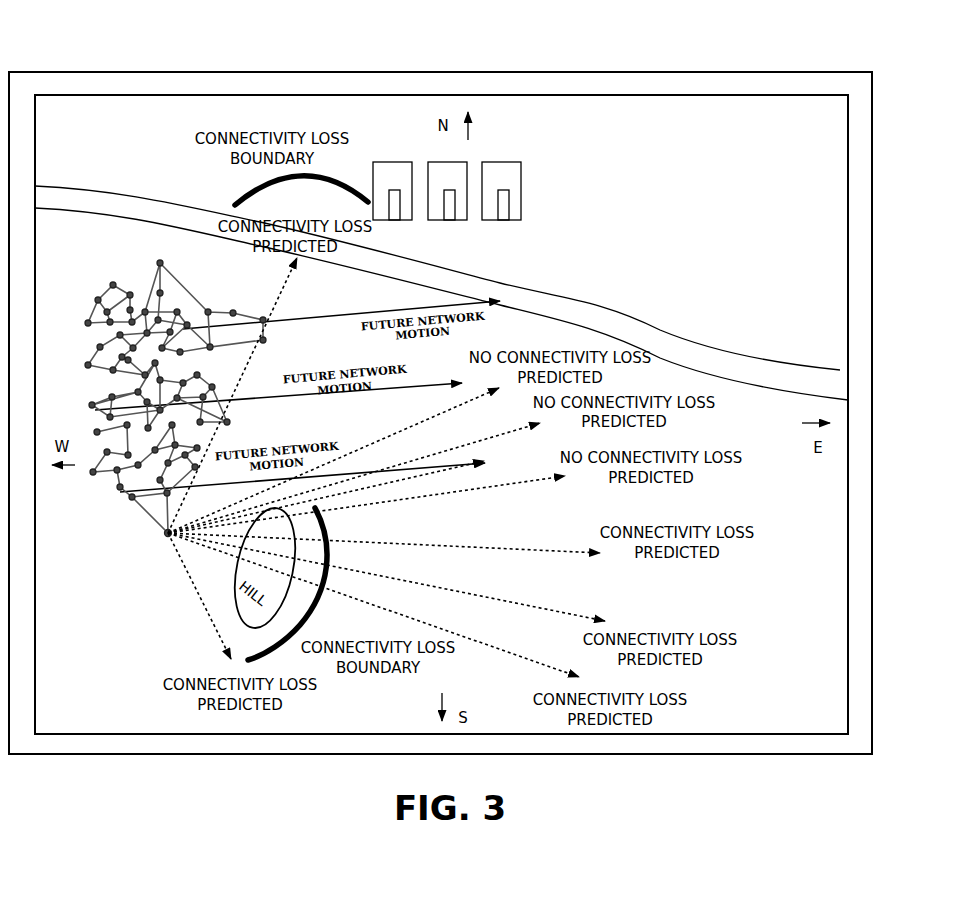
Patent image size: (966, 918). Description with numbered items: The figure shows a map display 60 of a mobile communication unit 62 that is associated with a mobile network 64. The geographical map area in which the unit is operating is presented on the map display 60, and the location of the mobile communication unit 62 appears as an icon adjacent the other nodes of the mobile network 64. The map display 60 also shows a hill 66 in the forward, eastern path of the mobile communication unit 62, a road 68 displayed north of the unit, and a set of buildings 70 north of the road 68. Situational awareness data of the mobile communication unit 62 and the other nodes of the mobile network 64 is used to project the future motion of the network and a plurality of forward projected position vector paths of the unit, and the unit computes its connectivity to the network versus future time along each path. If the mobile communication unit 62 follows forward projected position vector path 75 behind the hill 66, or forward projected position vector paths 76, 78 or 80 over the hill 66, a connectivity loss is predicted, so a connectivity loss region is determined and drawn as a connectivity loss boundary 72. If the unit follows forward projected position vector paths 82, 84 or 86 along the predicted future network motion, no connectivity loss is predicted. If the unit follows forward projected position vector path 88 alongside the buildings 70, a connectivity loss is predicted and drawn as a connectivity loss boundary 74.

The map display 60 is at (890, 58).
The mobile communication unit 62 is at (158, 541).
The mobile network 64 is at (108, 272).
The hill 66 is at (235, 633).
The road 68 is at (548, 283).
The set of buildings 70 is at (538, 146).
The connectivity loss boundary 72 is at (327, 527).
The connectivity loss boundary 74 is at (342, 180).
The forward projected position vector path 75 is at (193, 587).
The forward projected position vector path 76 is at (424, 624).
The forward projected position vector path 78 is at (472, 596).
The forward projected position vector path 80 is at (462, 547).
The forward projected position vector path 82 is at (495, 482).
The forward projected position vector path 84 is at (490, 450).
The forward projected position vector path 86 is at (446, 412).
The forward projected position vector path 88 is at (290, 290).